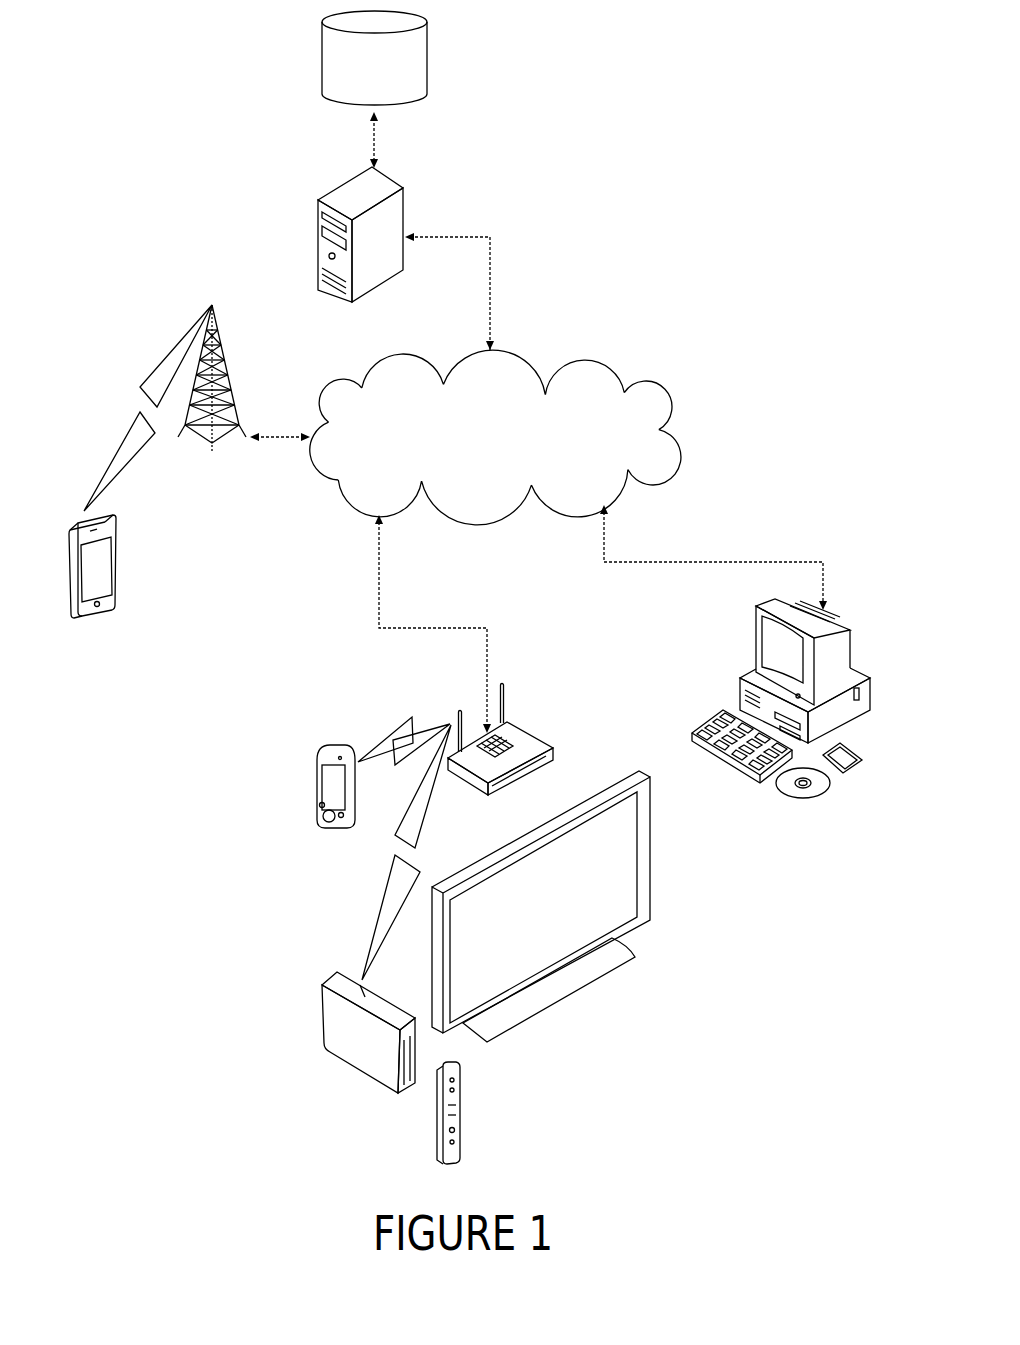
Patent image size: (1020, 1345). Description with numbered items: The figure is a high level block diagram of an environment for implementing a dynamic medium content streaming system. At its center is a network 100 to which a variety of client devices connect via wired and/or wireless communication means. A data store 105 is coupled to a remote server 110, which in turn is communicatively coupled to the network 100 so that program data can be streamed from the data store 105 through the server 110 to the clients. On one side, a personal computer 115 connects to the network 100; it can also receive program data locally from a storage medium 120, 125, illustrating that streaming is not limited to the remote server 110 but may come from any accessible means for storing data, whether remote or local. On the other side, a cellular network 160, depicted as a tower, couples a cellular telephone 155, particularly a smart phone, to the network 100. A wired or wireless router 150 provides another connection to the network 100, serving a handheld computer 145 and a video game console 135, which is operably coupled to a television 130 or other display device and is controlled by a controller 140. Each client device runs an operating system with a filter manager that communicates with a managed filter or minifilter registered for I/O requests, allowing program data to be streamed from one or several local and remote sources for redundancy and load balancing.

The network 100 is at (495, 437).
The data store 105 is at (374, 58).
The remote server 110 is at (360, 234).
The personal computer 115 is at (781, 691).
The storage medium 120 is at (865, 742).
The storage medium 125 is at (790, 787).
The television 130 is at (541, 906).
The video game console 135 is at (368, 1032).
The controller 140 is at (428, 1113).
The handheld computer 145 is at (343, 775).
The router 150 is at (504, 740).
The cellular telephone 155 is at (98, 574).
The cellular network 160 is at (212, 396).